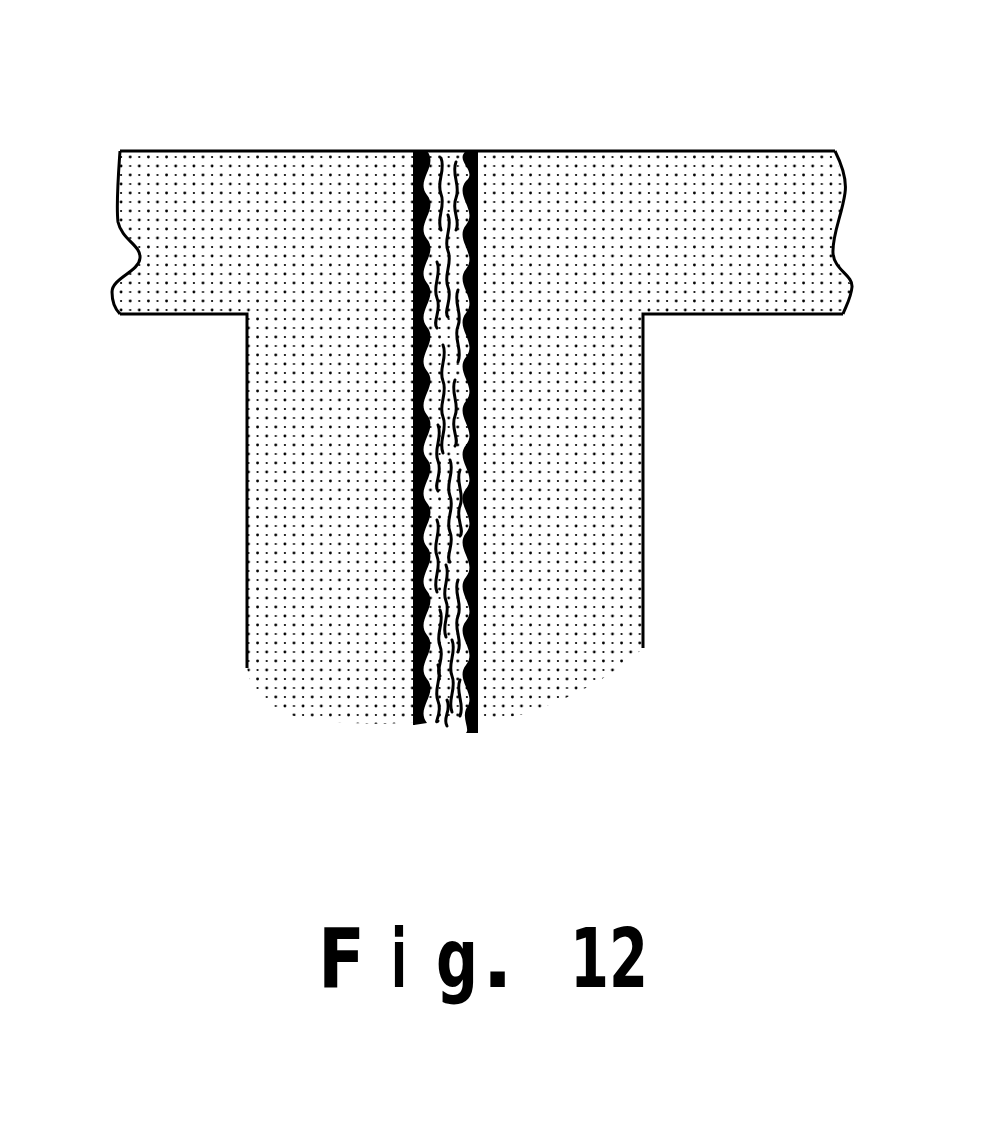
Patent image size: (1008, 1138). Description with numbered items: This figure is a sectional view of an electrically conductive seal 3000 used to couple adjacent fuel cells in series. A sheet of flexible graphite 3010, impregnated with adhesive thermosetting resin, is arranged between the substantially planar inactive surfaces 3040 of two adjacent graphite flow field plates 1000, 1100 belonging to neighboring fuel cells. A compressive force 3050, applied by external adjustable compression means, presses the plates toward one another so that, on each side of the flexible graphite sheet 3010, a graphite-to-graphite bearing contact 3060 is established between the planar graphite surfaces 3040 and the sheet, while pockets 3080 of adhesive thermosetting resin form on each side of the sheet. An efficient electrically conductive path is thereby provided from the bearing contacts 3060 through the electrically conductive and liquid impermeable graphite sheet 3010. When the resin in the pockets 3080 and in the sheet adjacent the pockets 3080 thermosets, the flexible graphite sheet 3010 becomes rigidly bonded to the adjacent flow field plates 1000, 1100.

The flow field plate 1000 is at (270, 150).
The flow field plate 1100 is at (685, 150).
The electrically conductive seal 3000 is at (434, 152).
The sheet of flexible graphite 3010 is at (455, 160).
The planar inactive surfaces 3040 is at (403, 450).
The compressive force 3050 is at (122, 225).
The graphite-to-graphite bearing contact 3060 is at (410, 308).
The pockets of adhesive thermosetting resin 3080 is at (413, 263).